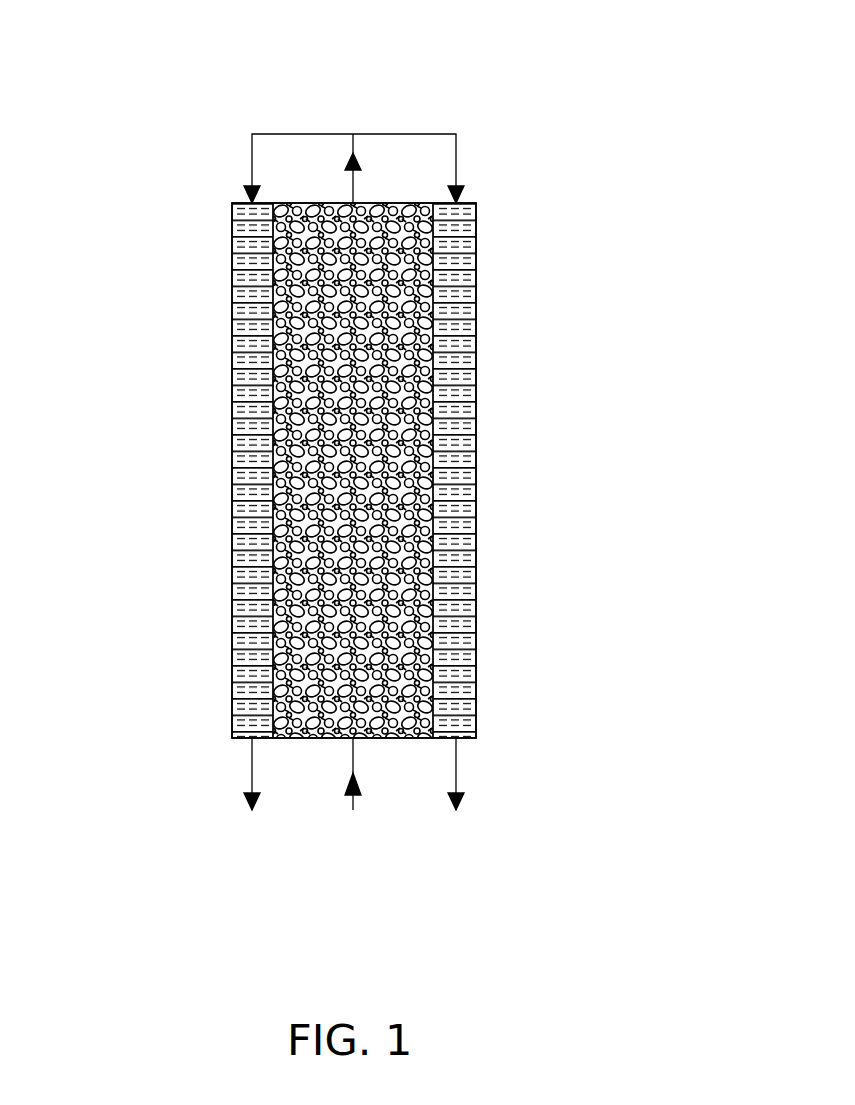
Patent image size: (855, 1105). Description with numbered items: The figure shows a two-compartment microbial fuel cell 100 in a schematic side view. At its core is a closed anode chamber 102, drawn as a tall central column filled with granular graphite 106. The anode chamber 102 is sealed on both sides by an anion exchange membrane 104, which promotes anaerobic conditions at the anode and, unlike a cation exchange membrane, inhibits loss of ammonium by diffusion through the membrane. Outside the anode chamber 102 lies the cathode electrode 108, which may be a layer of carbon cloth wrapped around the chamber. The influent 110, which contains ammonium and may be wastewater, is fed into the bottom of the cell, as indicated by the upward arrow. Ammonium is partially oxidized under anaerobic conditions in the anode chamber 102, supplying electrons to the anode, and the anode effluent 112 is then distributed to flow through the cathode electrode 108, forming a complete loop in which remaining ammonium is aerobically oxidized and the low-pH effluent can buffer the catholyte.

The two-compartment microbial fuel cell 100 is at (205, 75).
The anode chamber 102 is at (395, 183).
The anion exchange membrane 104 is at (272, 738).
The granular graphite 106 is at (377, 349).
The cathode electrode 108 is at (453, 585).
The influent 110 is at (351, 800).
The anode effluent 112 is at (456, 800).